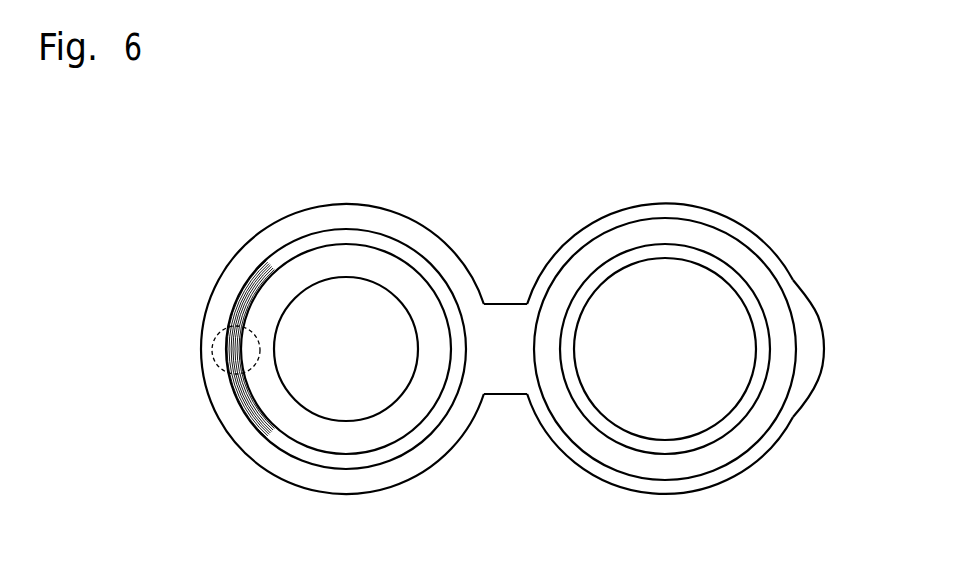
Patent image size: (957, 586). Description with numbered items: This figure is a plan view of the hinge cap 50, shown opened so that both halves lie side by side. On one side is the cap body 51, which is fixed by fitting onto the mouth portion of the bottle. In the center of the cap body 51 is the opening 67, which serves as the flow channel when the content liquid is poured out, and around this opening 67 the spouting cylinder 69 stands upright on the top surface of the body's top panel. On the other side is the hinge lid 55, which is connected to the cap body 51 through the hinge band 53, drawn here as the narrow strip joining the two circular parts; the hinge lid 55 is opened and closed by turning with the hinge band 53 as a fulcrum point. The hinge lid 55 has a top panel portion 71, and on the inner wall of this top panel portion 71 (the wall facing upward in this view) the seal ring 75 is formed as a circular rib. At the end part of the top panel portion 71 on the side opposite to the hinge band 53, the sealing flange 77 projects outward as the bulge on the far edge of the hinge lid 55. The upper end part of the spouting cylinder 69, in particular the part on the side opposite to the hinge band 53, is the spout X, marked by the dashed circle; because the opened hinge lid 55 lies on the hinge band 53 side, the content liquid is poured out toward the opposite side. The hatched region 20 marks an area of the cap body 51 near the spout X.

The cap 50 is at (542, 320).
The cap body 51 is at (316, 490).
The hinge band 53 is at (507, 379).
The hinge lid 55 is at (722, 213).
The sealing flange 77 is at (813, 343).
The spouting cylinder 69 is at (371, 229).
The marking region 20 is at (250, 273).
The spout X is at (217, 333).
The opening 67 is at (356, 361).
The seal ring 75 is at (733, 283).
The top panel portion 71 is at (676, 361).